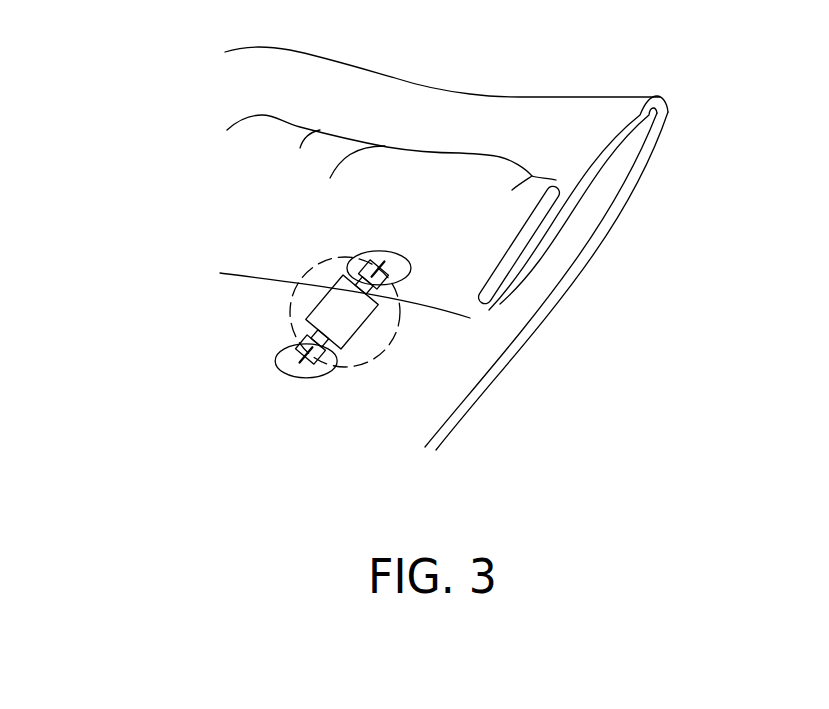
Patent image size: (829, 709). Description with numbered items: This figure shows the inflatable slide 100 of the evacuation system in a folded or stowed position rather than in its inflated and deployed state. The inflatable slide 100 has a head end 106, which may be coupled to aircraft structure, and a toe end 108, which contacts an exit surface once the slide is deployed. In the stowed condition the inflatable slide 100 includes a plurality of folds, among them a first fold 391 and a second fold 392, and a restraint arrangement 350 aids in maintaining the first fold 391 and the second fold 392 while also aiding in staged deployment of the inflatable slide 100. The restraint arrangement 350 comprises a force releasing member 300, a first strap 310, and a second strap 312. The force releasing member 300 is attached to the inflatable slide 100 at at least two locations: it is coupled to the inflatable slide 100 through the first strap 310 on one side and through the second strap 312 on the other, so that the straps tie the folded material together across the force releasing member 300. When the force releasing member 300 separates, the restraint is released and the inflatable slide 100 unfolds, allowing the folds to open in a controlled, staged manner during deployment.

The inflatable slide 100 is at (395, 92).
The toe end 108 is at (432, 138).
The head end 106 is at (338, 463).
The force releasing member 300 is at (343, 309).
The first strap 310 is at (318, 355).
The second strap 312 is at (358, 263).
The restraint arrangement 350 is at (428, 349).
The first fold 391 is at (662, 99).
The second fold 392 is at (478, 320).